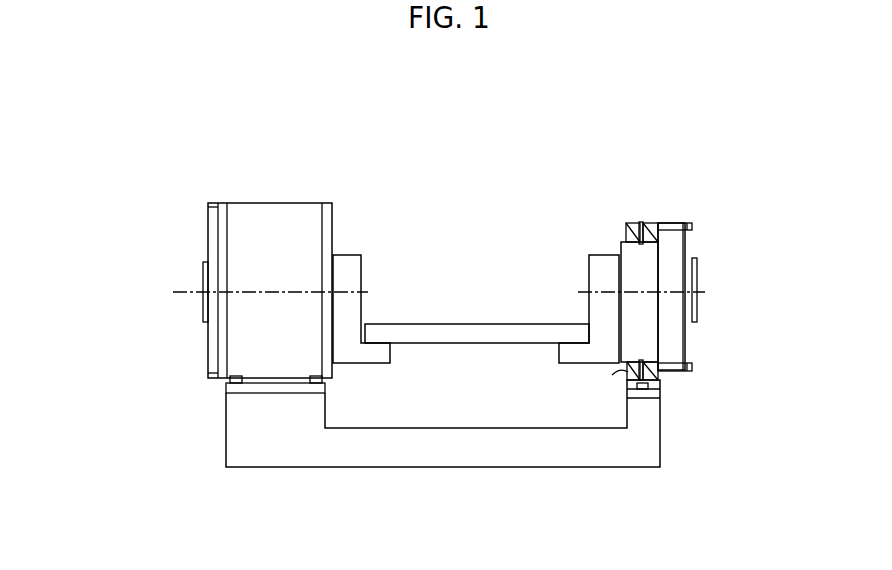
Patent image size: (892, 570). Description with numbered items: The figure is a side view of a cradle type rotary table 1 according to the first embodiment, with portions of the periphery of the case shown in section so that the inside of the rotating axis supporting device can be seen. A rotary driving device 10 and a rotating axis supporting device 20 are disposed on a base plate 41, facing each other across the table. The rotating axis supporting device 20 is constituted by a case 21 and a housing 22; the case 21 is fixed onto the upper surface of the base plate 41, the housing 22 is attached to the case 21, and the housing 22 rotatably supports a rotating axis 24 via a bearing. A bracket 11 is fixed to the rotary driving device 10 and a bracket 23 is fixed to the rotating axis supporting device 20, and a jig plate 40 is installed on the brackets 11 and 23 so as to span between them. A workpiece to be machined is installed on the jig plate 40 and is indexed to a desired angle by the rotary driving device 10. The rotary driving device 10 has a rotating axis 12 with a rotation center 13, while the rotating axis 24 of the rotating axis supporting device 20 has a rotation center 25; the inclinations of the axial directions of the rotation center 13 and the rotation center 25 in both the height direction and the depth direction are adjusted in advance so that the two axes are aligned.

The cradle type rotary table 1 is at (184, 175).
The rotary driving device 10 is at (253, 248).
The bracket 11 is at (345, 255).
The rotating axis 12 is at (204, 273).
The rotation center 13 is at (185, 300).
The rotating axis supporting device 20 is at (695, 230).
The case 21 is at (658, 383).
The housing 22 is at (677, 338).
The bracket 23 is at (588, 262).
The rotating axis 24 is at (691, 256).
The rotation center 25 is at (703, 288).
The jig plate 40 is at (487, 335).
The base plate 41 is at (247, 440).